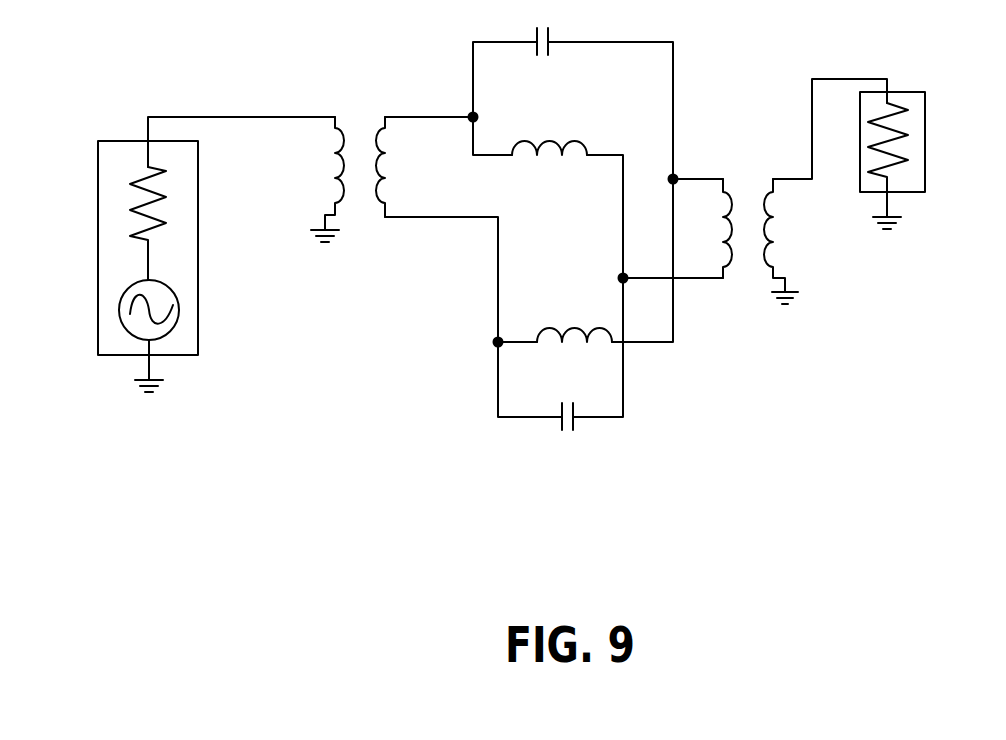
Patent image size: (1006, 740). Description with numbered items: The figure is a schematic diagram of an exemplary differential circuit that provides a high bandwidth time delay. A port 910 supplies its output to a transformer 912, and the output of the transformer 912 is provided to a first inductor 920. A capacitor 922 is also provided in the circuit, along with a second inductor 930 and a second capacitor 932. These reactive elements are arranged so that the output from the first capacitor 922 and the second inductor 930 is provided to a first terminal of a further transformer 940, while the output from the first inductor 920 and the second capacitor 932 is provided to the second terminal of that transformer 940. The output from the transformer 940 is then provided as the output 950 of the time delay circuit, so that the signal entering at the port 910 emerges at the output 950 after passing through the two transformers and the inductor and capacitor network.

The port 910 is at (198, 228).
The transformer 912 is at (350, 117).
The first inductor 920 is at (545, 147).
The capacitor 922 is at (553, 42).
The second inductor 930 is at (545, 330).
The second capacitor 932 is at (578, 417).
The transformer 940 is at (762, 192).
The output 950 is at (925, 153).